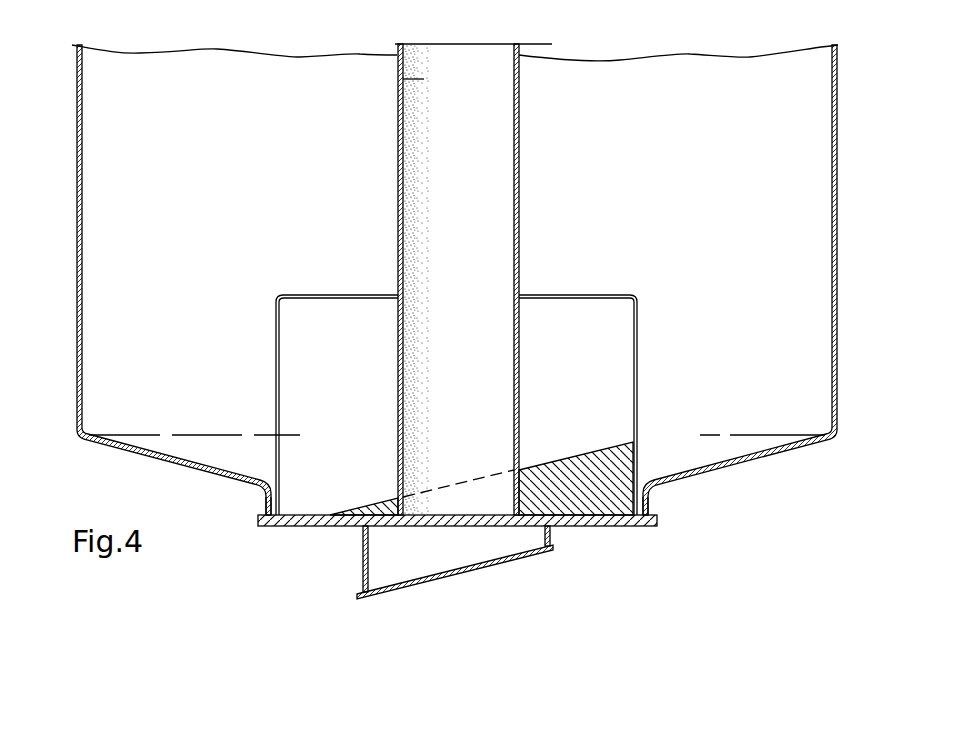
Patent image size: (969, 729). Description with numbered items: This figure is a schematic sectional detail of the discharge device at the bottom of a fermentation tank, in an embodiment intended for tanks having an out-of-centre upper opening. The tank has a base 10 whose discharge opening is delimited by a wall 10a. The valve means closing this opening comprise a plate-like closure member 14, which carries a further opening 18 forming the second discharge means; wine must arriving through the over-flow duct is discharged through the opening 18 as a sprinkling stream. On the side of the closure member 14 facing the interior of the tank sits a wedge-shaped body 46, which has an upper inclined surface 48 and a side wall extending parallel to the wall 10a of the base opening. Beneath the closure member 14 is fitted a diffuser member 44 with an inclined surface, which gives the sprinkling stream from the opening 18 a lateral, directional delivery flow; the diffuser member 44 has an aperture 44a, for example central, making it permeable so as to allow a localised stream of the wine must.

The base 10 is at (236, 481).
The wall 10a is at (658, 503).
The closure member 14 is at (600, 526).
The opening 18 is at (416, 516).
The diffuser member 44 is at (463, 579).
The aperture 44a is at (449, 574).
The wedge-shaped body 46 is at (613, 477).
The upper inclined surface 48 is at (594, 462).